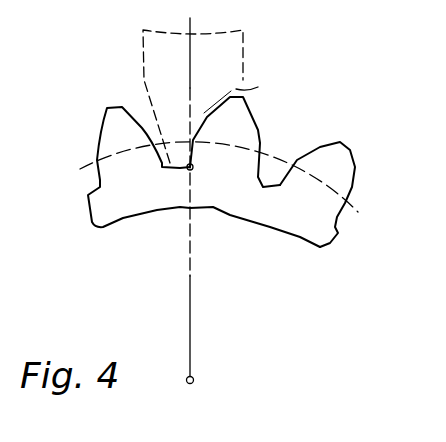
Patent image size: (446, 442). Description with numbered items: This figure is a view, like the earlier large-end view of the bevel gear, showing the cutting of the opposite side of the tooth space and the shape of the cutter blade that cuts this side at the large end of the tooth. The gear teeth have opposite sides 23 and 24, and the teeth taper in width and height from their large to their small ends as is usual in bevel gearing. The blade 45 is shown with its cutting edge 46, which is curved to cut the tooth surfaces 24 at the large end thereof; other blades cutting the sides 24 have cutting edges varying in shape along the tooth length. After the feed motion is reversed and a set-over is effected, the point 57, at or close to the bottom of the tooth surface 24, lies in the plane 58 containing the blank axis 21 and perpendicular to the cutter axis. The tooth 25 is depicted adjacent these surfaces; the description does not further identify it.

The axis of the gear 21 is at (193, 379).
The tooth side 23 is at (221, 154).
The tooth side 24 is at (323, 144).
The gear tooth 25 is at (233, 121).
The blade 45 is at (233, 60).
The cutting edge 46 is at (258, 87).
The point 57 is at (188, 170).
The plane 58 is at (192, 308).